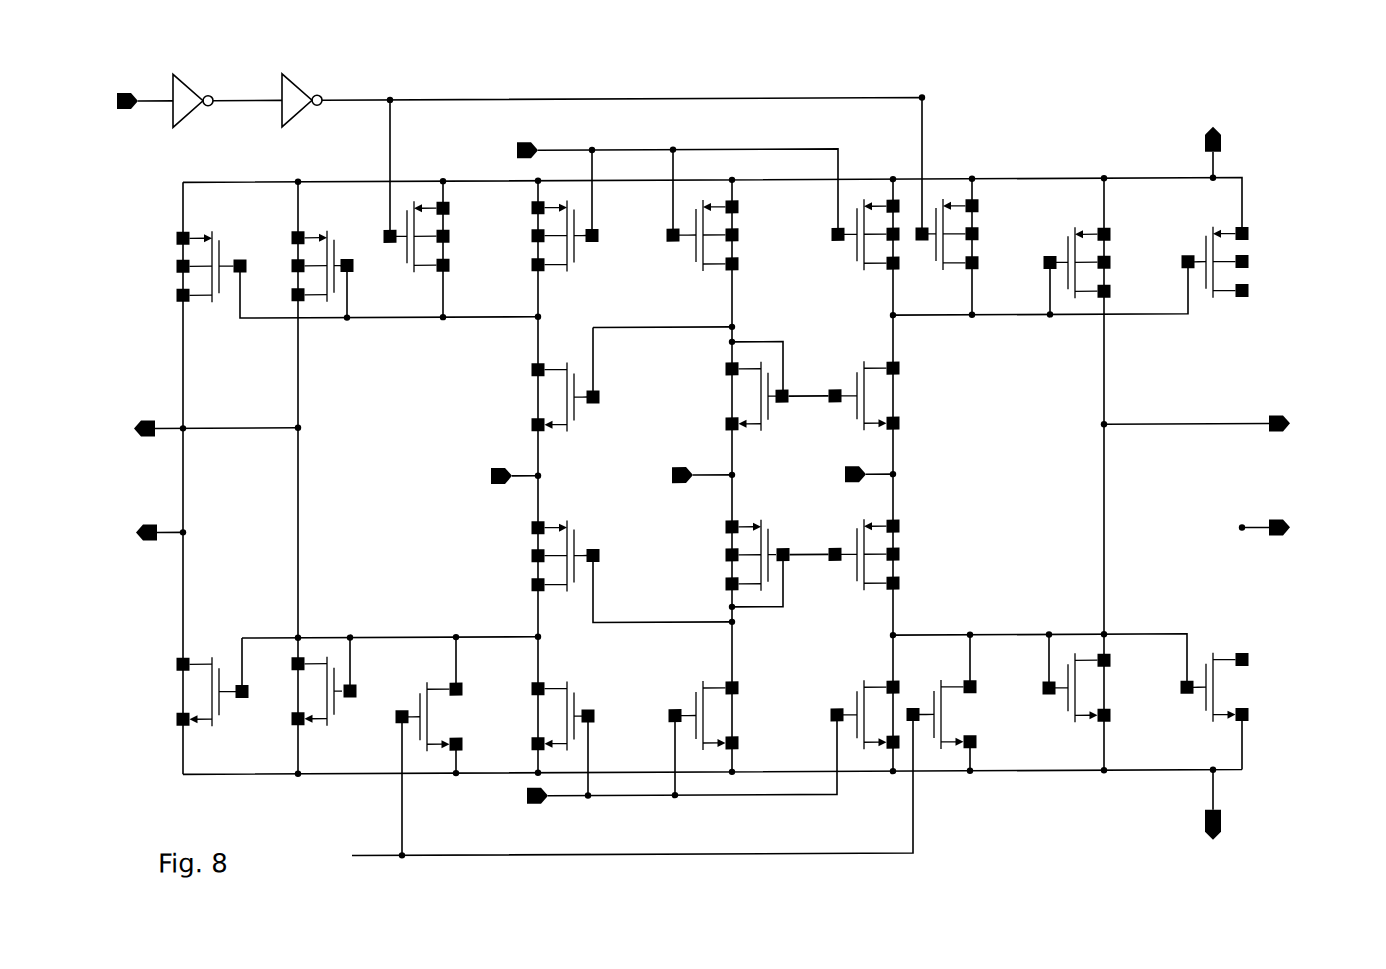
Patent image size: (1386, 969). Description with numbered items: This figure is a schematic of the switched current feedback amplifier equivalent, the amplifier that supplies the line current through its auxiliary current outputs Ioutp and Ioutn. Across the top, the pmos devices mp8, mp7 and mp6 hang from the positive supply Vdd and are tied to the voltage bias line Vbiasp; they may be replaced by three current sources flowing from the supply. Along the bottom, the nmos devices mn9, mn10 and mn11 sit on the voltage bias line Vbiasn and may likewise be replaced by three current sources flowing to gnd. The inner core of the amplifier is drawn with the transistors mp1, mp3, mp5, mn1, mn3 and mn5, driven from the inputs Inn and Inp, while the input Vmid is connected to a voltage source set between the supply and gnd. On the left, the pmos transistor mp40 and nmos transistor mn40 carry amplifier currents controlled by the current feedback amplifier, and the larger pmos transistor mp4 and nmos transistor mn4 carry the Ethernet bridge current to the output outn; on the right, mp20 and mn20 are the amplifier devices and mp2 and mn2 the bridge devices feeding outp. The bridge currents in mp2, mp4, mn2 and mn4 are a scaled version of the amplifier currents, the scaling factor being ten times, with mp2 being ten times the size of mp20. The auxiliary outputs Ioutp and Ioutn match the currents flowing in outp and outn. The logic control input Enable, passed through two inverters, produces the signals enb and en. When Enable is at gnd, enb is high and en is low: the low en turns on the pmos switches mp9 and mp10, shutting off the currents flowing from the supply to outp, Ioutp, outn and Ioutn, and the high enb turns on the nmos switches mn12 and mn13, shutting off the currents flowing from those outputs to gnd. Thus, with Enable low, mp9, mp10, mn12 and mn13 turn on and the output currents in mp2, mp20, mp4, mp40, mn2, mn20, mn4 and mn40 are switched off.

The pmos bridge output transistor mp4 is at (212, 291).
The pmos amplifier transistor mp40 is at (324, 291).
The pmos switch mp9 is at (399, 236).
The pmos bias device mp8 is at (532, 236).
The pmos bias device mp7 is at (684, 232).
The pmos bias device mp6 is at (843, 232).
The pmos switch mp10 is at (986, 234).
The pmos amplifier transistor mp20 is at (1111, 284).
The pmos bridge output transistor mp2 is at (1235, 283).
The PMOS input transistor mp3 is at (540, 556).
The PMOS input transistor mp5 is at (731, 556).
The PMOS input transistor mp1 is at (890, 555).
The NMOS input transistor mn3 is at (540, 397).
The NMOS input transistor mn5 is at (734, 396).
The NMOS input transistor mn1 is at (890, 396).
The nmos bridge output transistor mn4 is at (213, 667).
The nmos amplifier transistor mn40 is at (327, 667).
The nmos switch mn13 is at (415, 708).
The nmos bias device mn11 is at (537, 715).
The nmos bias device mn10 is at (835, 715).
The nmos bias device mn9 is at (939, 698).
The nmos switch mn12 is at (1021, 703).
The nmos amplifier transistor mn20 is at (1118, 664).
The nmos bridge output transistor mn2 is at (1235, 662).
The logic control input Enable is at (139, 85).
The inverted enable signal enb is at (290, 471).
The enable signal en is at (355, 86).
The pmos voltage bias line Vbiasp is at (491, 152).
The positive supply Vdd is at (1217, 112).
The negative input Inn is at (481, 477).
The mid voltage input Vmid is at (653, 476).
The positive input Inp is at (838, 475).
The negative output outn is at (156, 442).
The auxiliary current output Ioutn is at (156, 548).
The positive output outp is at (1281, 436).
The auxiliary current output Ioutp is at (1280, 542).
The nmos voltage bias line Vbiasn is at (501, 795).
The ground gnd is at (1270, 786).